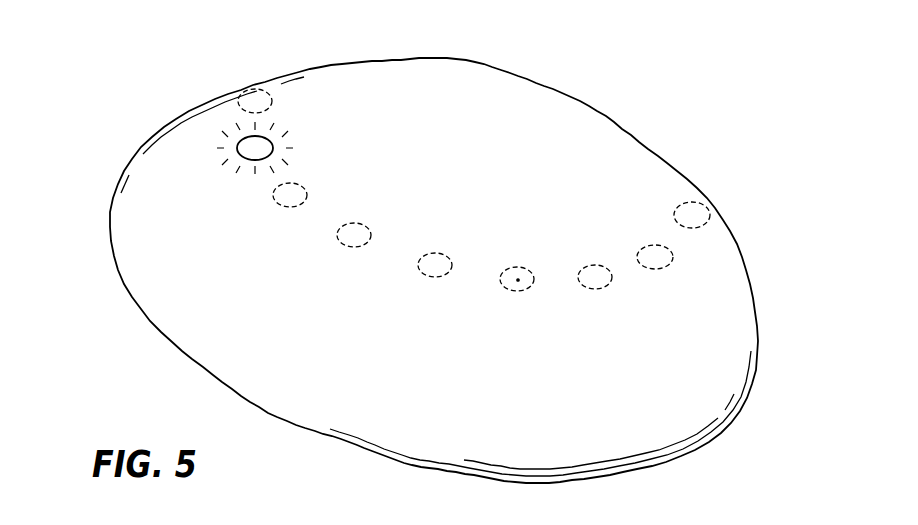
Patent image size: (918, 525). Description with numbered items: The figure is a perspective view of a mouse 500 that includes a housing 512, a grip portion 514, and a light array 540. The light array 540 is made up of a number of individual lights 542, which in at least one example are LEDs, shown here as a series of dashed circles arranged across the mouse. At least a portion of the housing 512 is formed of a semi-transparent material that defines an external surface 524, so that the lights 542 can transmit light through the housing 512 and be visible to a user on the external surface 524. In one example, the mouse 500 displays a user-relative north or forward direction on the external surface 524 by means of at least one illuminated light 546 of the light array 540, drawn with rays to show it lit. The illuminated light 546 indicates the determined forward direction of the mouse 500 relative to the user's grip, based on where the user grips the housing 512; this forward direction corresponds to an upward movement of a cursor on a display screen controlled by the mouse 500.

The mouse 500 is at (767, 240).
The housing 512 is at (153, 166).
The grip portion 514 is at (500, 97).
The external surface 524 is at (578, 127).
The light array 540 is at (673, 272).
The lights 542 is at (583, 276).
The illuminated light 546 is at (237, 150).